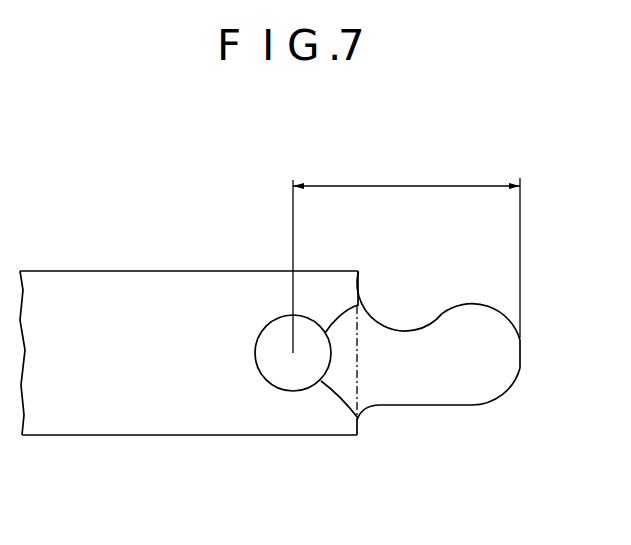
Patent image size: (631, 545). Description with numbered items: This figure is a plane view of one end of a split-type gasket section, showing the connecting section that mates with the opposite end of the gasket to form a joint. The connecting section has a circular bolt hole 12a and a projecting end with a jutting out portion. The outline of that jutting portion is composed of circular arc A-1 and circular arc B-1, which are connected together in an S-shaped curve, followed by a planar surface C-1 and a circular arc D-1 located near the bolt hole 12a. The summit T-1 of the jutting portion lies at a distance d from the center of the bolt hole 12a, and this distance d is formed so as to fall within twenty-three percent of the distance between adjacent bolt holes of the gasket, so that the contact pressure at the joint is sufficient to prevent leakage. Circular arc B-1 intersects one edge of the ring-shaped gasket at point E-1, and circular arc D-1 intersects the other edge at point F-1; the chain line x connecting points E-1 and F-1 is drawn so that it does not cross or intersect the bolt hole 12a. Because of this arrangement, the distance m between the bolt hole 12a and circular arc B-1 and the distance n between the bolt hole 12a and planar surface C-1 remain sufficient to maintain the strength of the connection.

The bolt hole 12a is at (265, 325).
The distance between bolt hole and circular arc B-1 m is at (338, 316).
The distance between bolt hole and planar surface C-1 n is at (342, 400).
The chain line x is at (348, 394).
The distance between summit and bolt hole center d is at (406, 254).
The intersection point of circular arc B-1 with gasket edge E-1 is at (360, 272).
The circular arc B-1 is at (388, 324).
The circular arc A-1 is at (521, 338).
The summit of jutting portion T-1 is at (522, 367).
The planar surface C-1 is at (472, 407).
The circular arc D-1 is at (378, 408).
The intersection point of circular arc D-1 with gasket edge F-1 is at (357, 426).